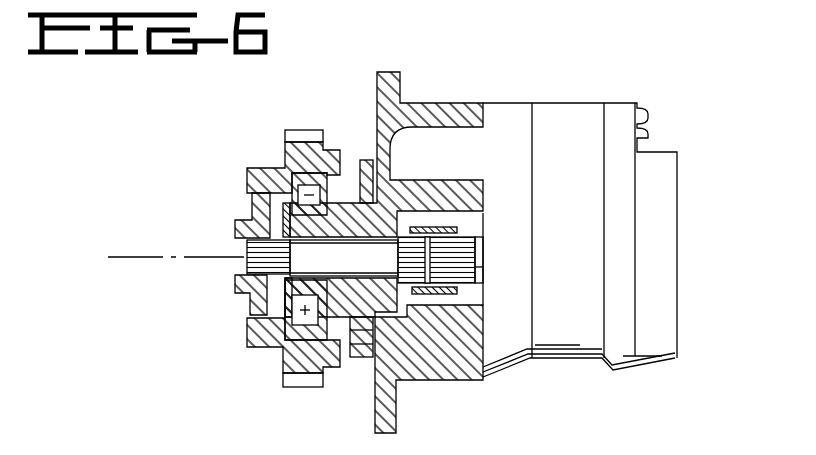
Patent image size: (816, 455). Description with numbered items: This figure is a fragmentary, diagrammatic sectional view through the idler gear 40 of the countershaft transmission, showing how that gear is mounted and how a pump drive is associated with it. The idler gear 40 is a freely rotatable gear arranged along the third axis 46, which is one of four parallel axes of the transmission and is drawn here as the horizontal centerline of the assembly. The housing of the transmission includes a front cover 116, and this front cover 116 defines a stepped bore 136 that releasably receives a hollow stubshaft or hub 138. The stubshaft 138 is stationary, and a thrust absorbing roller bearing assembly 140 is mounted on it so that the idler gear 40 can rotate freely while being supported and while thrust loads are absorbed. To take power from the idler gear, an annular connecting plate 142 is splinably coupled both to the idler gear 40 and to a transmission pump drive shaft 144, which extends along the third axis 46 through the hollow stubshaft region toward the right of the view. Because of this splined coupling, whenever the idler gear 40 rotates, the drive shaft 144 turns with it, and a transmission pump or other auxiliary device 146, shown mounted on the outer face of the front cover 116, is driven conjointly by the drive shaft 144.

The idler gear 40 is at (290, 137).
The third axis 46 is at (200, 255).
The front cover 116 is at (441, 88).
The stepped bore 136 is at (477, 218).
The stubshaft 138 is at (383, 207).
The roller bearing assembly 140 is at (283, 355).
The annular connecting plate 142 is at (252, 297).
The transmission pump drive shaft 144 is at (358, 261).
The transmission pump 146 is at (587, 254).